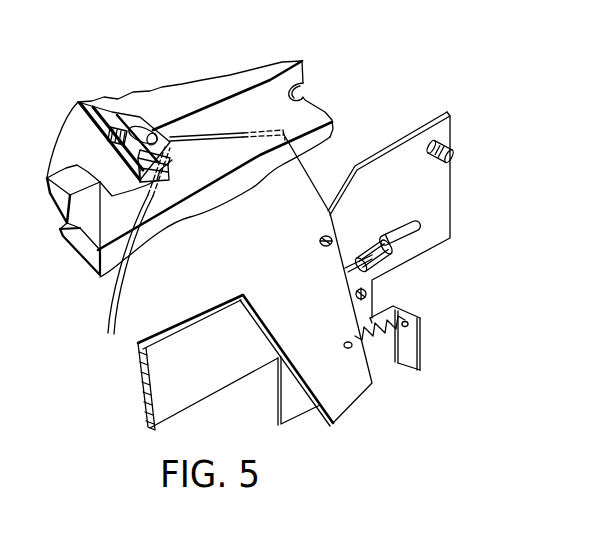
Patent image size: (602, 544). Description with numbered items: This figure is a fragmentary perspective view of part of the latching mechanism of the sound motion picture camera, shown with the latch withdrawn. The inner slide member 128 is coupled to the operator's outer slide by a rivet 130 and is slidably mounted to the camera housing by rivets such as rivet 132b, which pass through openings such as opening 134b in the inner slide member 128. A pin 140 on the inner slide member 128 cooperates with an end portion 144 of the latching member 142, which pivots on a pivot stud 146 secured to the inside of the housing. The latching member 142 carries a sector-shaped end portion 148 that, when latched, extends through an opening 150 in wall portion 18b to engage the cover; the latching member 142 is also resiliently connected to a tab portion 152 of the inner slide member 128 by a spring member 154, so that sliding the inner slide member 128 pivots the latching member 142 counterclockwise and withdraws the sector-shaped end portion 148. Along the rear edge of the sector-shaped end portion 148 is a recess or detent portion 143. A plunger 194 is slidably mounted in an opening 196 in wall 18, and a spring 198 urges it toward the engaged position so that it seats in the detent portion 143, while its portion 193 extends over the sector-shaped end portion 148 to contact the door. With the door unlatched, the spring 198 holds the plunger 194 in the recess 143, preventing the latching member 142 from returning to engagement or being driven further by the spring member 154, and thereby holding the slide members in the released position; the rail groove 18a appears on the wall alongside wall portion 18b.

The wall 18 is at (60, 182).
The rail groove 18a is at (80, 201).
The wall portion 18b is at (95, 232).
The inner slide member 128 is at (412, 137).
The rivet 130 is at (453, 142).
The rivet 132b is at (380, 256).
The opening 134b is at (395, 233).
The pin 140 is at (355, 294).
The latching member 142 is at (263, 333).
The recess or detent portion 143 is at (200, 140).
The end portion 144 is at (348, 400).
The pivot stud 146 is at (318, 240).
The sector-shaped end portion 148 is at (125, 284).
The opening 150 is at (300, 86).
The tab portion 152 is at (418, 346).
The spring member 154 is at (382, 348).
The portion of plunger 193 is at (167, 150).
The plunger 194 is at (142, 130).
The opening 196 is at (88, 150).
The spring 198 is at (120, 124).